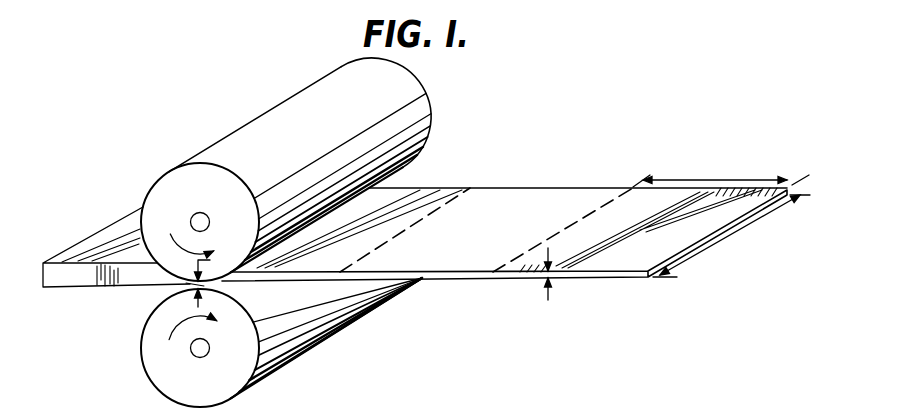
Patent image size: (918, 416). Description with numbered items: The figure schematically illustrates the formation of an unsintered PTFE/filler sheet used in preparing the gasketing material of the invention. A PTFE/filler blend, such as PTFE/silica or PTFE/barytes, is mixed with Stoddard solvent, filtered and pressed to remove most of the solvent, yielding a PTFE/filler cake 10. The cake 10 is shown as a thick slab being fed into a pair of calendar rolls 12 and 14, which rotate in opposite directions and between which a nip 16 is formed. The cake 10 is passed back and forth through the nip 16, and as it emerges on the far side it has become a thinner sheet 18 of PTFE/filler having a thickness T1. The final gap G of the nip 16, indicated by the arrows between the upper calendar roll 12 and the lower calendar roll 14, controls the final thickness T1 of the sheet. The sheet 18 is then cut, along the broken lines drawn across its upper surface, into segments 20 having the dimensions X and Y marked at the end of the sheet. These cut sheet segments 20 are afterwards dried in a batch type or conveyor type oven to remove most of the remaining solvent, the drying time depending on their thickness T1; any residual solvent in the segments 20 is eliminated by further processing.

The PTFE/filler cake 10 is at (105, 227).
The calendar roll 12 is at (207, 196).
The calendar roll 14 is at (210, 391).
The nip 16 is at (188, 285).
The sheet of PTFE/filler 18 is at (458, 283).
The sheet segments 20 is at (440, 187).
The final gap G is at (213, 279).
The thickness T1 is at (552, 278).
The dimension X is at (720, 177).
The dimension Y is at (737, 233).